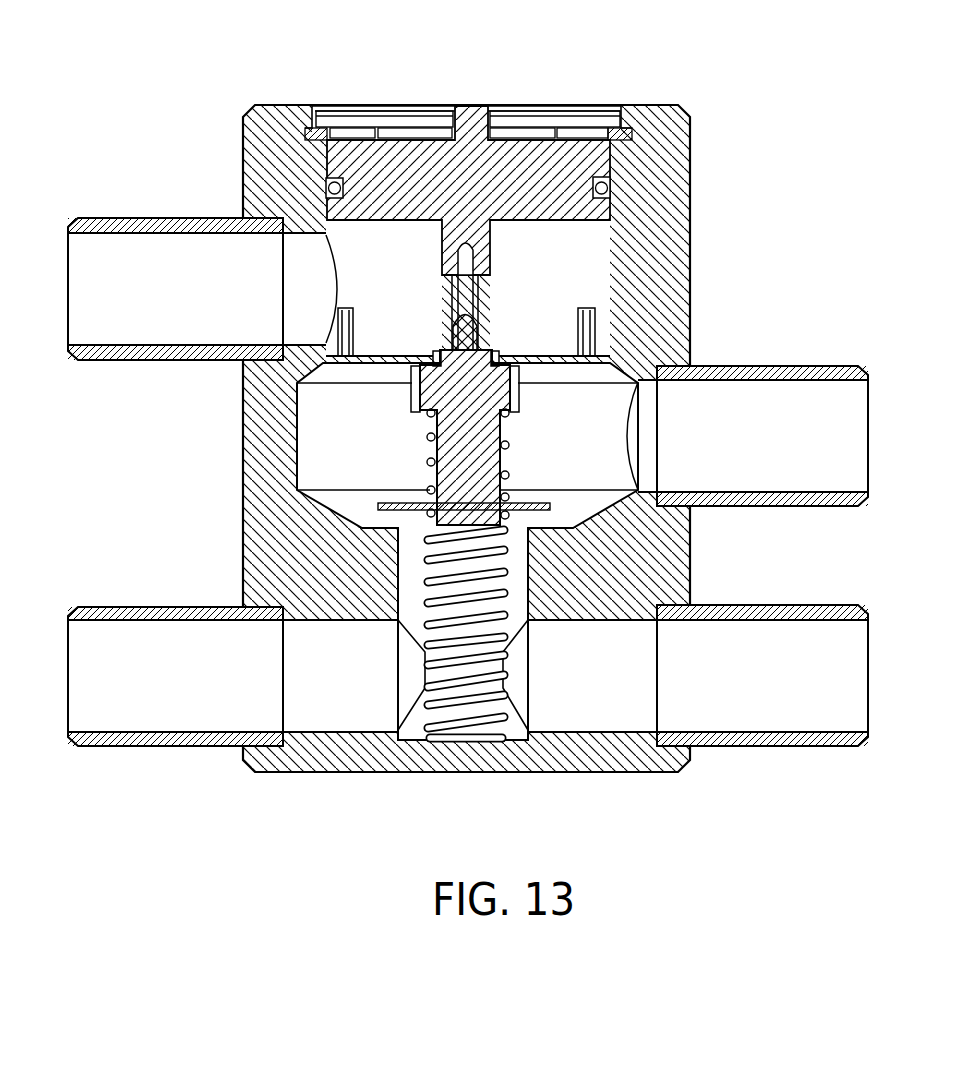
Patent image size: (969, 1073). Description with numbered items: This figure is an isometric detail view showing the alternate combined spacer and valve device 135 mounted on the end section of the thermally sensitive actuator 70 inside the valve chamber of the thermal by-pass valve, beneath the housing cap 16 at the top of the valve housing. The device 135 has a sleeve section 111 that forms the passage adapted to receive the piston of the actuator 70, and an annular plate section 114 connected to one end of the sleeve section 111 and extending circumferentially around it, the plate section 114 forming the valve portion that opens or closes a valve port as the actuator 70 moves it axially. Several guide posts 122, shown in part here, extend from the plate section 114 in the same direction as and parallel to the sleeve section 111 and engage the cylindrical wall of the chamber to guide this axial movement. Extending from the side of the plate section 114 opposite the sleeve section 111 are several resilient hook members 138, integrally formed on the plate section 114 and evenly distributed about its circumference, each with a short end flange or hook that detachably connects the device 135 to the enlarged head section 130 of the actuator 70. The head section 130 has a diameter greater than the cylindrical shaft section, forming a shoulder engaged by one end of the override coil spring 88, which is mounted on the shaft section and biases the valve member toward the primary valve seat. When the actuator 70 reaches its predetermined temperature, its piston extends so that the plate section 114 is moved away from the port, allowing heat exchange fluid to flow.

The housing cap 16 is at (548, 165).
The sleeve section 111 is at (444, 286).
The combined spacer and valve device 135 is at (395, 356).
The guide posts 122 is at (582, 304).
The plate section 114 is at (537, 355).
The resilient hook members 138 is at (411, 390).
The enlarged head section 130 is at (458, 383).
The thermally sensitive actuator 70 is at (432, 447).
The override coil spring 88 is at (508, 474).